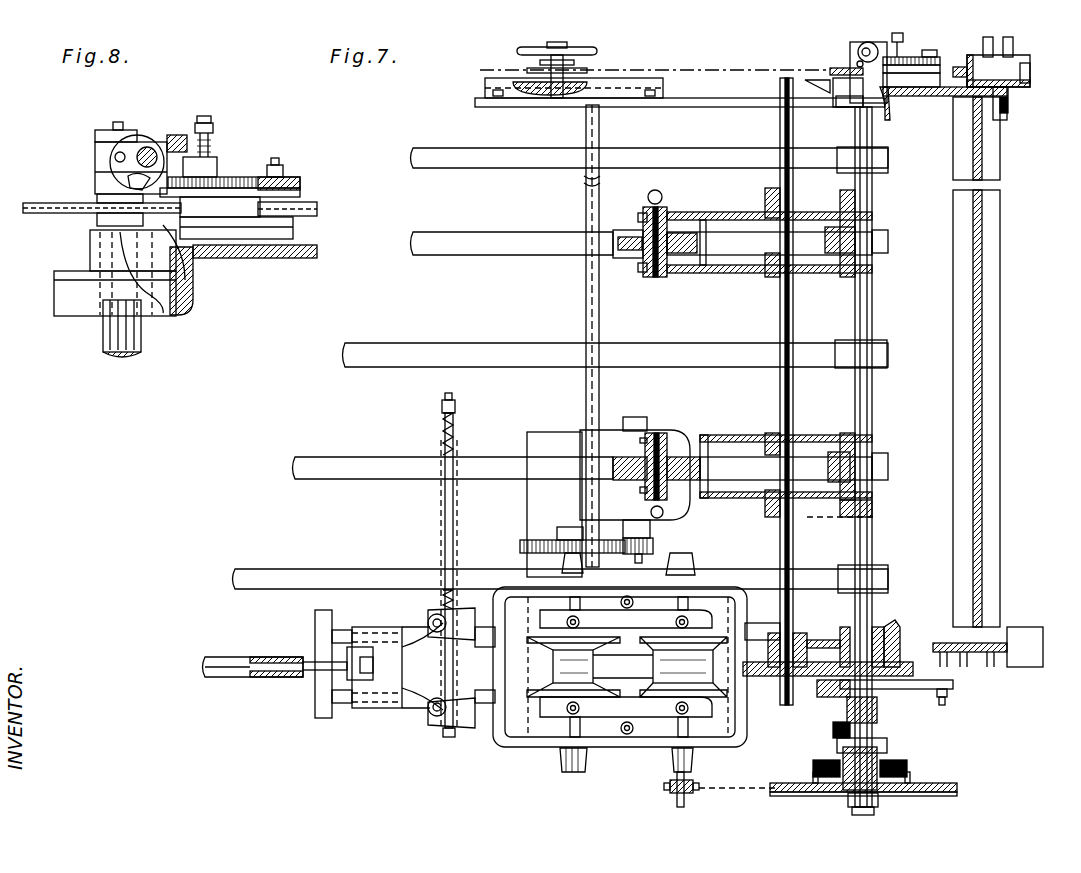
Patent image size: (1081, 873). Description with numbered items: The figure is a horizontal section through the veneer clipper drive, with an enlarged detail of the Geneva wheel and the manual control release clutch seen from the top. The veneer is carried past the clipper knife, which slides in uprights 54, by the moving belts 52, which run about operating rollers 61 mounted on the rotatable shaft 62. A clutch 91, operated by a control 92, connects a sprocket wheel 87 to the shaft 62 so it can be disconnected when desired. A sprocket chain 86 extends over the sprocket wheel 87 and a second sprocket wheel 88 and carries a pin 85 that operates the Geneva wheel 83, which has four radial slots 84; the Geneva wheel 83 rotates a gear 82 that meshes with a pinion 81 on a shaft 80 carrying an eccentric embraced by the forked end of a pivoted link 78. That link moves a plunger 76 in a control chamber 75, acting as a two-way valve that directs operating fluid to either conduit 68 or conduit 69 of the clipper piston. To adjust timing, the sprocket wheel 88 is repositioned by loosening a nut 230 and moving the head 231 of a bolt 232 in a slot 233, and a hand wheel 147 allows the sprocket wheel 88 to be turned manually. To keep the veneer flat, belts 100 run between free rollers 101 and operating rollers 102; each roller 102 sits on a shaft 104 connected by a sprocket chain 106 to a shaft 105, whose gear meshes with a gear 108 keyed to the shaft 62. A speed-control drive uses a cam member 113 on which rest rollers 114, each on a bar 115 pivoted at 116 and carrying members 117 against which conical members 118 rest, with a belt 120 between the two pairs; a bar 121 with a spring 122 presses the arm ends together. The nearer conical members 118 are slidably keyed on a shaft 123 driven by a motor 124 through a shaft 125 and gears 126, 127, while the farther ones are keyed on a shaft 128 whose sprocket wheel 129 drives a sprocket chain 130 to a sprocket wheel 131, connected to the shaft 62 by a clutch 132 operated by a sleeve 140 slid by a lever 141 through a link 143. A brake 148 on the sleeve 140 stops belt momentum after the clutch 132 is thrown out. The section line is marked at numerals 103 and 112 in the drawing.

In FIG. 7, the moving belts 52 is at (478, 243).
In FIG. 8, the uprights 54 is at (236, 258).
In FIG. 7, the uprights 54 is at (1010, 95).
In FIG. 7, the operating rollers 61 is at (884, 168).
In FIG. 8, the rotatable shaft 62 is at (140, 332).
In FIG. 7, the rotatable shaft 62 is at (855, 131).
In FIG. 7, the fluid pressure conduit 68 is at (993, 40).
In FIG. 7, the fluid pressure conduit 69 is at (1013, 48).
In FIG. 7, the control chamber 75 is at (1030, 68).
In FIG. 7, the plunger 76 is at (968, 100).
In FIG. 8, the pivoted link 78 is at (317, 208).
In FIG. 7, the pivoted link 78 is at (940, 100).
In FIG. 7, the shaft 80 is at (958, 67).
In FIG. 8, the pinion 81 is at (300, 182).
In FIG. 7, the pinion 81 is at (940, 56).
In FIG. 8, the gear 82 is at (215, 180).
In FIG. 8, the Geneva wheel 83 is at (225, 195).
In FIG. 7, the Geneva wheel 83 is at (915, 88).
In FIG. 8, the radial slots 84 is at (236, 222).
In FIG. 8, the pin 85 is at (193, 243).
In FIG. 8, the sprocket chain 86 is at (40, 202).
In FIG. 7, the sprocket chain 86 is at (672, 70).
In FIG. 8, the sprocket wheel 87 is at (97, 220).
In FIG. 7, the sprocket wheel 87 is at (832, 68).
In FIG. 7, the sprocket wheel 88 is at (578, 84).
In FIG. 8, the clutch 91 is at (97, 155).
In FIG. 7, the clutch 91 is at (852, 58).
In FIG. 8, the control 92 is at (147, 150).
In FIG. 7, the belts 100 is at (613, 235).
In FIG. 7, the free roller 101 is at (625, 258).
In FIG. 7, the operating roller 102 is at (884, 482).
In FIG. 7, the tube 103 is at (716, 272).
In FIG. 7, the shaft 104 is at (872, 506).
In FIG. 7, the shaft 105 is at (793, 304).
In FIG. 7, the sprocket chain 106 is at (812, 212).
In FIG. 7, the gear 108 is at (910, 692).
In FIG. 7, the rod 112 is at (230, 677).
In FIG. 7, the cam member 113 is at (425, 708).
In FIG. 7, the rollers 114 is at (428, 620).
In FIG. 7, the bar 115 is at (483, 728).
In FIG. 7, the pivot 116 is at (629, 737).
In FIG. 7, the members 117 is at (590, 622).
In FIG. 7, the conical members 118 is at (570, 637).
In FIG. 7, the belt 120 is at (635, 690).
In FIG. 7, the bar 121 is at (455, 520).
In FIG. 7, the spring 122 is at (455, 438).
In FIG. 7, the shaft 123 is at (568, 748).
In FIG. 7, the motor 124 is at (672, 508).
In FIG. 7, the shaft 125 is at (662, 566).
In FIG. 7, the gear 126 is at (626, 538).
In FIG. 7, the gear 127 is at (530, 542).
In FIG. 7, the shaft 128 is at (699, 784).
In FIG. 7, the sprocket wheel 129 is at (672, 790).
In FIG. 7, the sprocket chain 130 is at (722, 795).
In FIG. 7, the sprocket wheel 131 is at (925, 785).
In FIG. 7, the clutch 132 is at (895, 760).
In FIG. 7, the sleeve 140 is at (880, 715).
In FIG. 8, the lever 141 is at (182, 135).
In FIG. 7, the link 143 is at (837, 745).
In FIG. 7, the hand wheel 147 is at (525, 48).
In FIG. 7, the brake 148 is at (847, 705).
In FIG. 7, the nut 230 is at (566, 46).
In FIG. 7, the head 231 is at (556, 96).
In FIG. 7, the bolt 232 is at (540, 62).
In FIG. 7, the slot 233 is at (530, 93).